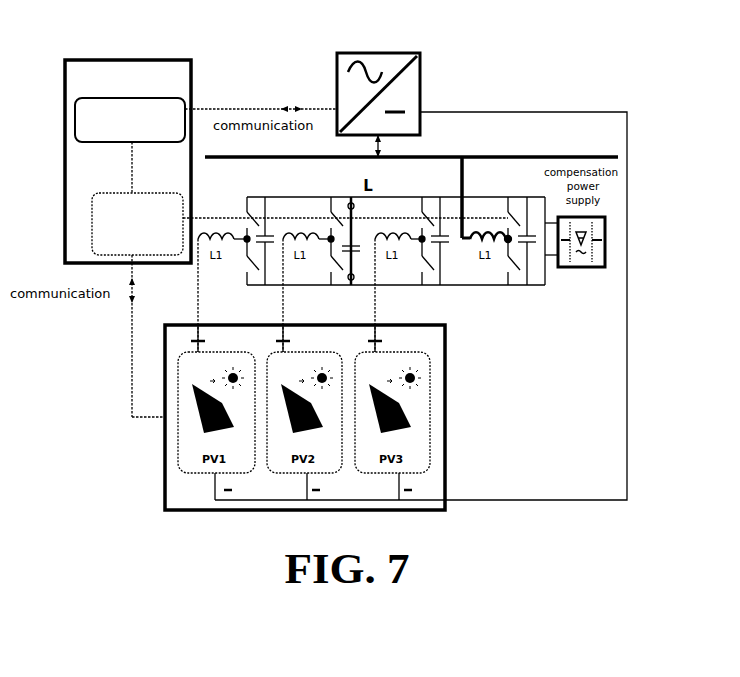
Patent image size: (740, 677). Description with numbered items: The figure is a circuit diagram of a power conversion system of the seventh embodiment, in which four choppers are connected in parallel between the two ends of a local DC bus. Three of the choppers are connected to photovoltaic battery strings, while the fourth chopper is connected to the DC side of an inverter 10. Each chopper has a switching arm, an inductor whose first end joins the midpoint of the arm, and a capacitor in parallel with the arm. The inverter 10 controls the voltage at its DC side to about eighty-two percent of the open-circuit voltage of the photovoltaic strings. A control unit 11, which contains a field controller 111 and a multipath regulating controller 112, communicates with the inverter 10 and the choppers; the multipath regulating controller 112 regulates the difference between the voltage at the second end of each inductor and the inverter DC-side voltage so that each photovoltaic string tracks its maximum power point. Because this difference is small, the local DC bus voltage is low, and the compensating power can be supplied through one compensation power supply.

The inverter 10 is at (378, 86).
The control unit 11 is at (78, 82).
The field controller 111 is at (130, 120).
The multipath regulating controller 112 is at (137, 224).